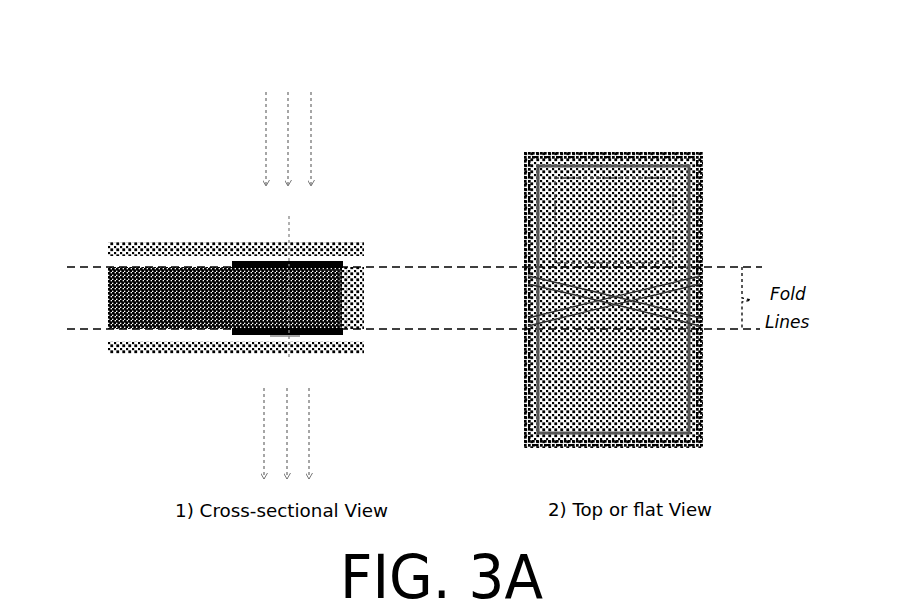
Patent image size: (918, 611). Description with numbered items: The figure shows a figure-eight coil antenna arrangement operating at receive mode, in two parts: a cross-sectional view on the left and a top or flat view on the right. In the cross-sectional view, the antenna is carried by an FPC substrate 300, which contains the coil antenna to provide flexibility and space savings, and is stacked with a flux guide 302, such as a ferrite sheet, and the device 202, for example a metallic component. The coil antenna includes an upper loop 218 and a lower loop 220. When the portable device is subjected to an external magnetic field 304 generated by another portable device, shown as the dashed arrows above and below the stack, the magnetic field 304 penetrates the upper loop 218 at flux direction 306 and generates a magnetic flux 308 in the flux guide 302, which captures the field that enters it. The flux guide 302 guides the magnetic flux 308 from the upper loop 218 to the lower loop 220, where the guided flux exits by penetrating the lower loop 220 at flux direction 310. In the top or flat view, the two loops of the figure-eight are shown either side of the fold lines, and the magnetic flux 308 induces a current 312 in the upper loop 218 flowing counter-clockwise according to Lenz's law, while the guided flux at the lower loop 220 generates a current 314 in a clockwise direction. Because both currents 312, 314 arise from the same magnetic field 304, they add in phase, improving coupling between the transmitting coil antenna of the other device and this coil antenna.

The device 202 is at (110, 310).
The upper loop 218 is at (327, 255).
The lower loop 220 is at (325, 343).
The FPC substrate 300 is at (250, 348).
The flux guide 302 is at (228, 260).
The external magnetic field 304 is at (293, 85).
The flux direction 306 is at (285, 227).
The magnetic flux 308 is at (315, 268).
The flux direction 310 is at (285, 343).
The current 312 is at (615, 180).
The current 314 is at (650, 420).